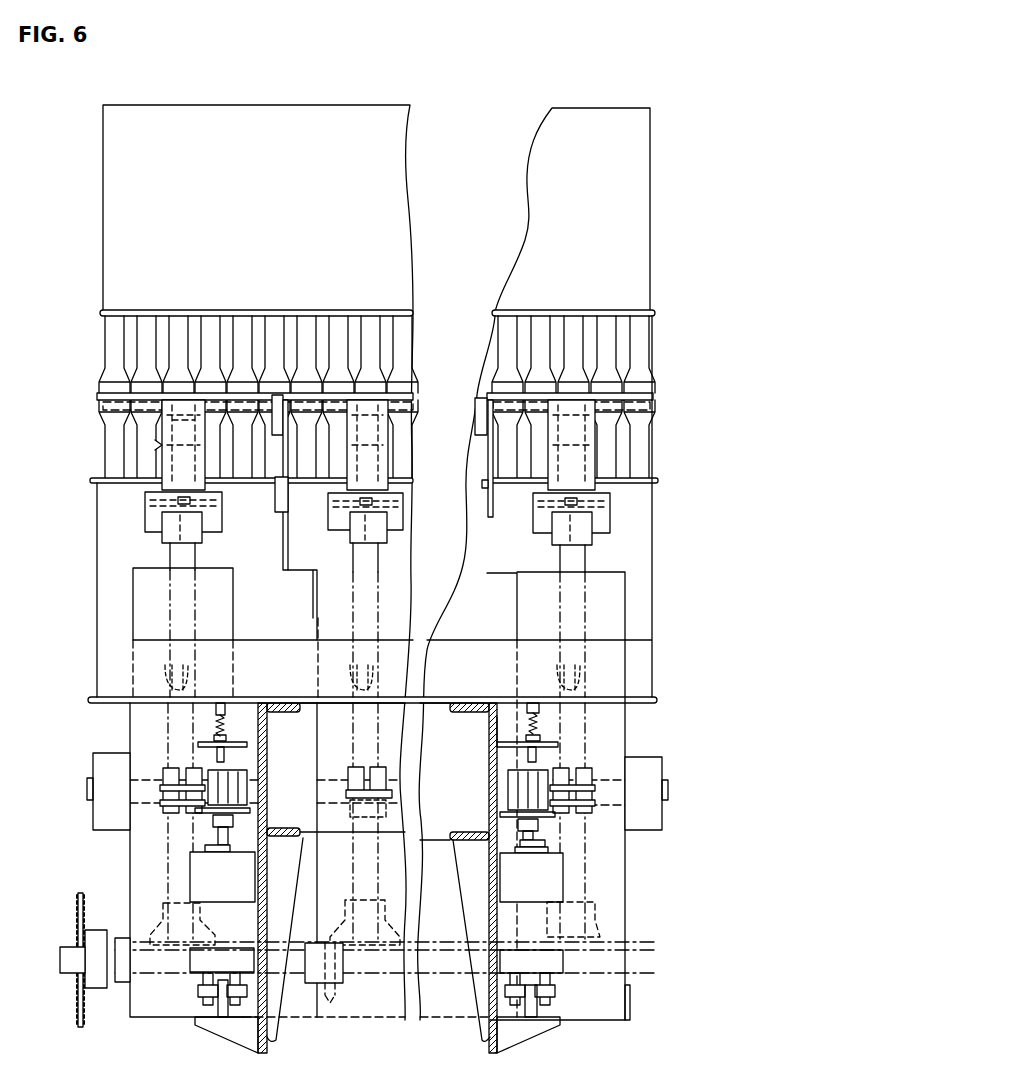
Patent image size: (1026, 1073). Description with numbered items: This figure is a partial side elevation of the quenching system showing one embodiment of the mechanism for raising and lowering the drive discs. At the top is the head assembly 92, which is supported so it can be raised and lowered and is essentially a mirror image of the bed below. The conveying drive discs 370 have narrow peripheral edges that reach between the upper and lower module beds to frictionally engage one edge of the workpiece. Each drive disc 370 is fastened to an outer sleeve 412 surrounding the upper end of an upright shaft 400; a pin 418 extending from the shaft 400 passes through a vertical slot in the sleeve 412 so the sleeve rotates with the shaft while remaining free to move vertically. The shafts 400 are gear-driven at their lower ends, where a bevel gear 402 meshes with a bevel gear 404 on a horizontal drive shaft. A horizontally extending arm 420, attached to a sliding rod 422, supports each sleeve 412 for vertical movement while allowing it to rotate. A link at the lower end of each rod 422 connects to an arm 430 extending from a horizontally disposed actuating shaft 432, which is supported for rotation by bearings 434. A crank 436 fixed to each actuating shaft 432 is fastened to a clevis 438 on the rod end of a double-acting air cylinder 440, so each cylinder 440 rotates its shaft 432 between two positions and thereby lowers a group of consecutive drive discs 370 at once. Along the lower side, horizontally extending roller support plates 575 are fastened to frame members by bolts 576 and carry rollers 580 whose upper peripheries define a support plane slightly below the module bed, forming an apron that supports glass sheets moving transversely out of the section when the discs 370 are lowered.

The head assembly 92 is at (95, 236).
The drive disc 370 is at (97, 397).
The pin 418 is at (155, 445).
The outer sleeve 412 is at (162, 466).
The arm 420 is at (215, 528).
The sliding rod 422 is at (178, 558).
The upright shaft 400 is at (385, 559).
The roller 580 is at (475, 428).
The roller support plate 575 is at (290, 452).
The bolt 576 is at (488, 490).
The arm 430 is at (202, 768).
The crank 436 is at (222, 778).
The bearing 434 is at (93, 818).
The clevis 438 is at (210, 815).
The air cylinder 440 is at (190, 877).
The actuating shaft 432 is at (438, 760).
The bevel gear 402 is at (390, 913).
The bevel gear 404 is at (340, 985).